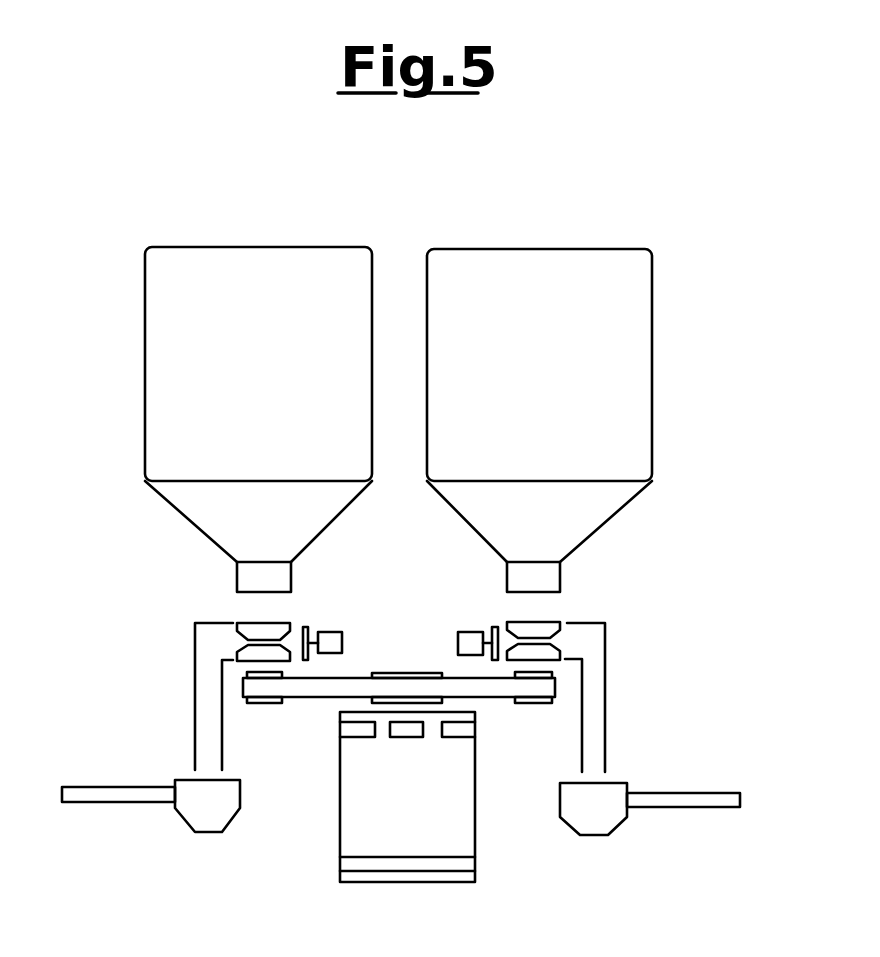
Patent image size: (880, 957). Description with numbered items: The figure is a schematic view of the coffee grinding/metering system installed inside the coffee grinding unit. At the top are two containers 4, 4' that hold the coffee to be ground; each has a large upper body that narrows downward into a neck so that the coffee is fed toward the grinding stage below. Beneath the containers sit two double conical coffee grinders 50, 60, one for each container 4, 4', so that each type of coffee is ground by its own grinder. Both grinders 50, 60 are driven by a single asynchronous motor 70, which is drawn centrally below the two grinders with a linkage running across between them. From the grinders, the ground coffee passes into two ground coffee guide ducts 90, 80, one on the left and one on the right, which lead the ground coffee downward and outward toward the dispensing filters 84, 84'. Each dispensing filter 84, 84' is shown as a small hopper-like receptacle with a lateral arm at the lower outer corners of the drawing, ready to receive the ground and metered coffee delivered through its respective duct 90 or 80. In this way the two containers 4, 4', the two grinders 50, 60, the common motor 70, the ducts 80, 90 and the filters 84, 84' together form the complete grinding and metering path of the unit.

The container 4 is at (258, 392).
The container 4' is at (539, 392).
The double conical coffee grinder 50 is at (250, 622).
The double conical coffee grinder 60 is at (547, 630).
The asynchronous motor 70 is at (457, 872).
The ground coffee guide duct 80 is at (595, 741).
The ground coffee guide duct 90 is at (205, 708).
The dispensing filter 84 is at (151, 838).
The dispensing filter 84' is at (650, 839).